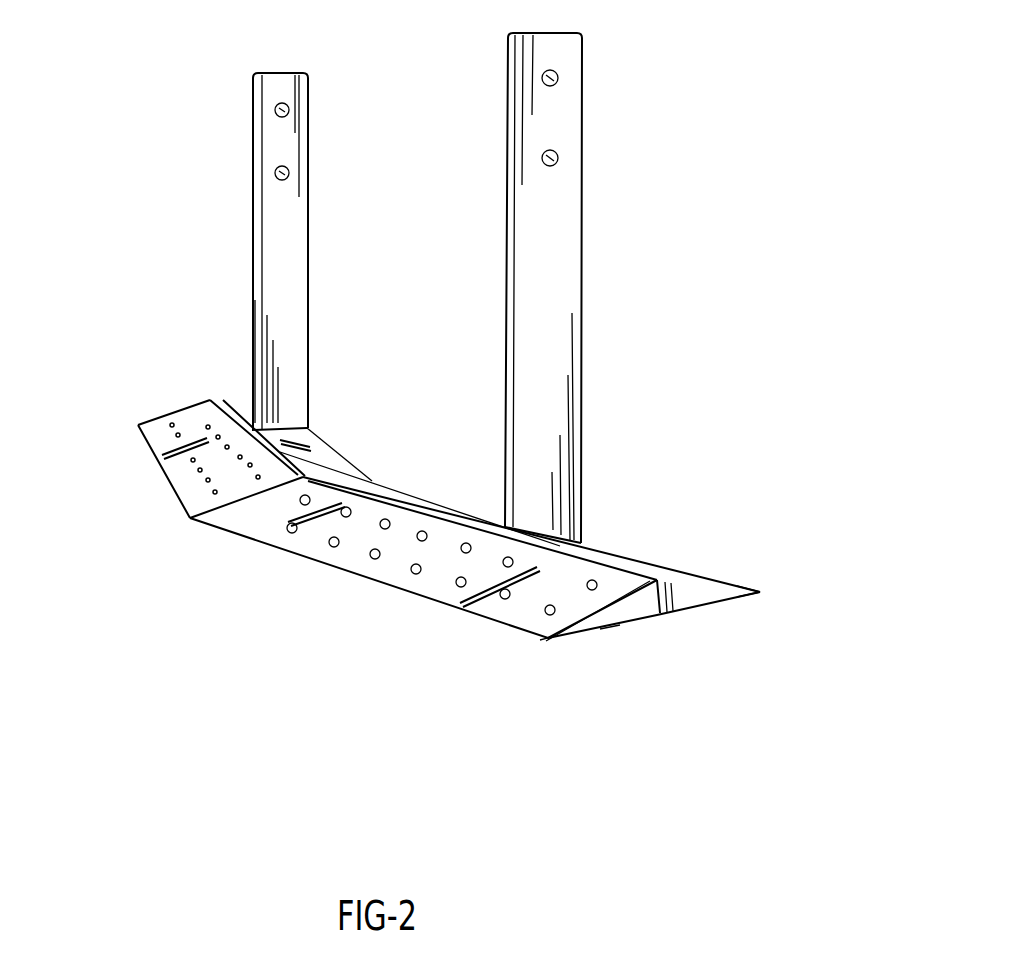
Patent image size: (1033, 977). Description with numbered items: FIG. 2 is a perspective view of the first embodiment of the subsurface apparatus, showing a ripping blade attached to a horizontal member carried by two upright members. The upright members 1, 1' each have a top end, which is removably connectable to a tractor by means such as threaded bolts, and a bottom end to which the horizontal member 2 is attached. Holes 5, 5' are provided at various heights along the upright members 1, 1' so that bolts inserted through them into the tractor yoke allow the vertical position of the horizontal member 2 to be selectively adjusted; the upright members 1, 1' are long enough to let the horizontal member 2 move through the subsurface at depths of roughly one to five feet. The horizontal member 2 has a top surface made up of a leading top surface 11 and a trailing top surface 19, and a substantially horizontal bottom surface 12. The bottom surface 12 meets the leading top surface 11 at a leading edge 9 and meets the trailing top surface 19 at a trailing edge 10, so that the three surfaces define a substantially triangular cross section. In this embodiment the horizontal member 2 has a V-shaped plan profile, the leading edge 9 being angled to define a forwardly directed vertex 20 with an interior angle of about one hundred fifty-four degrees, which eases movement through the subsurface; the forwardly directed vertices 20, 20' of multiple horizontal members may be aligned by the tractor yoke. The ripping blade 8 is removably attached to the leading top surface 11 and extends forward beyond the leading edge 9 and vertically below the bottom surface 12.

The upright member 1 is at (229, 251).
The upright member 1' is at (604, 282).
The horizontal member 2 is at (647, 608).
The hole 5 is at (622, 145).
The hole 5' is at (622, 54).
The ripping blade 8 is at (377, 575).
The leading edge 9 is at (548, 638).
The trailing edge 10 is at (760, 592).
The leading top surface 11 is at (183, 488).
The bottom surface 12 is at (607, 627).
The trailing top surface 19 is at (347, 468).
The forwardly directed vertex 20 is at (198, 542).
The forwardly directed vertex 20' is at (346, 408).